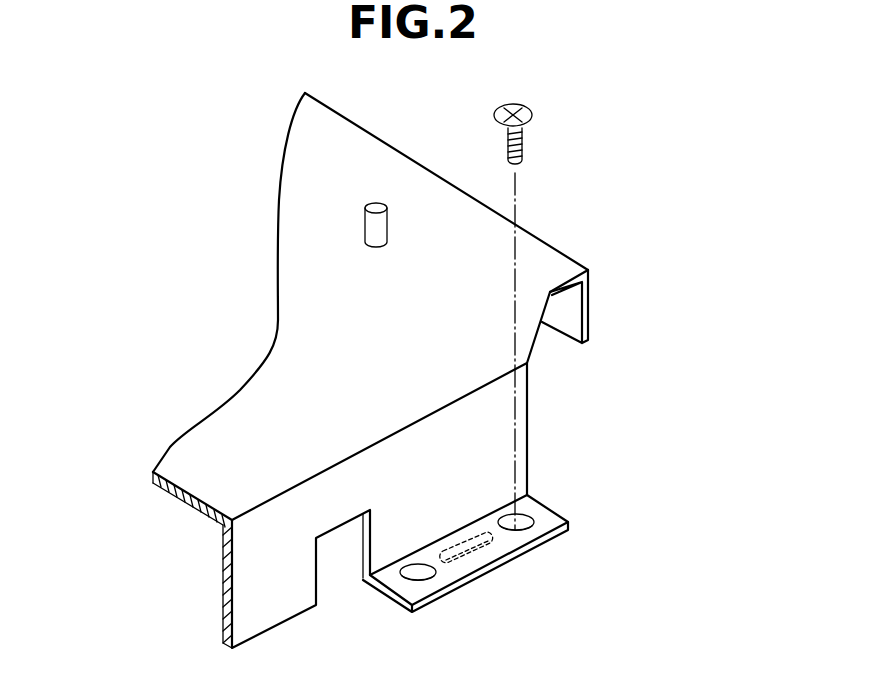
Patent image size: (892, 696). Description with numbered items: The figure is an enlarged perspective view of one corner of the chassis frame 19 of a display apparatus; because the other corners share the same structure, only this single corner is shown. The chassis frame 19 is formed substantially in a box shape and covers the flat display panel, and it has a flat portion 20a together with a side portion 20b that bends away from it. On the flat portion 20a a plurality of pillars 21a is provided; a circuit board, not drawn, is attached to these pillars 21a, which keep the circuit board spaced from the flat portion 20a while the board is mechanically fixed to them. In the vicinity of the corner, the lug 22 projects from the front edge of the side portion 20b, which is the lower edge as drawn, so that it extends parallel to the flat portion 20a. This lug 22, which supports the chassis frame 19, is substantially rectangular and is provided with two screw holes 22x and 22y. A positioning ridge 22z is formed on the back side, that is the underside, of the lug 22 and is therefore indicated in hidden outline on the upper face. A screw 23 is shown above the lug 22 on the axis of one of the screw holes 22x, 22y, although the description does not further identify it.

The chassis frame 19 is at (560, 197).
The flat portion 20a is at (540, 267).
The side portion 20b is at (495, 427).
The pillar 21a is at (377, 203).
The lug 22 is at (500, 542).
The screw hole 22x is at (423, 578).
The screw hole 22y is at (530, 518).
The positioning ridge 22z is at (483, 557).
The screw 23 is at (533, 110).